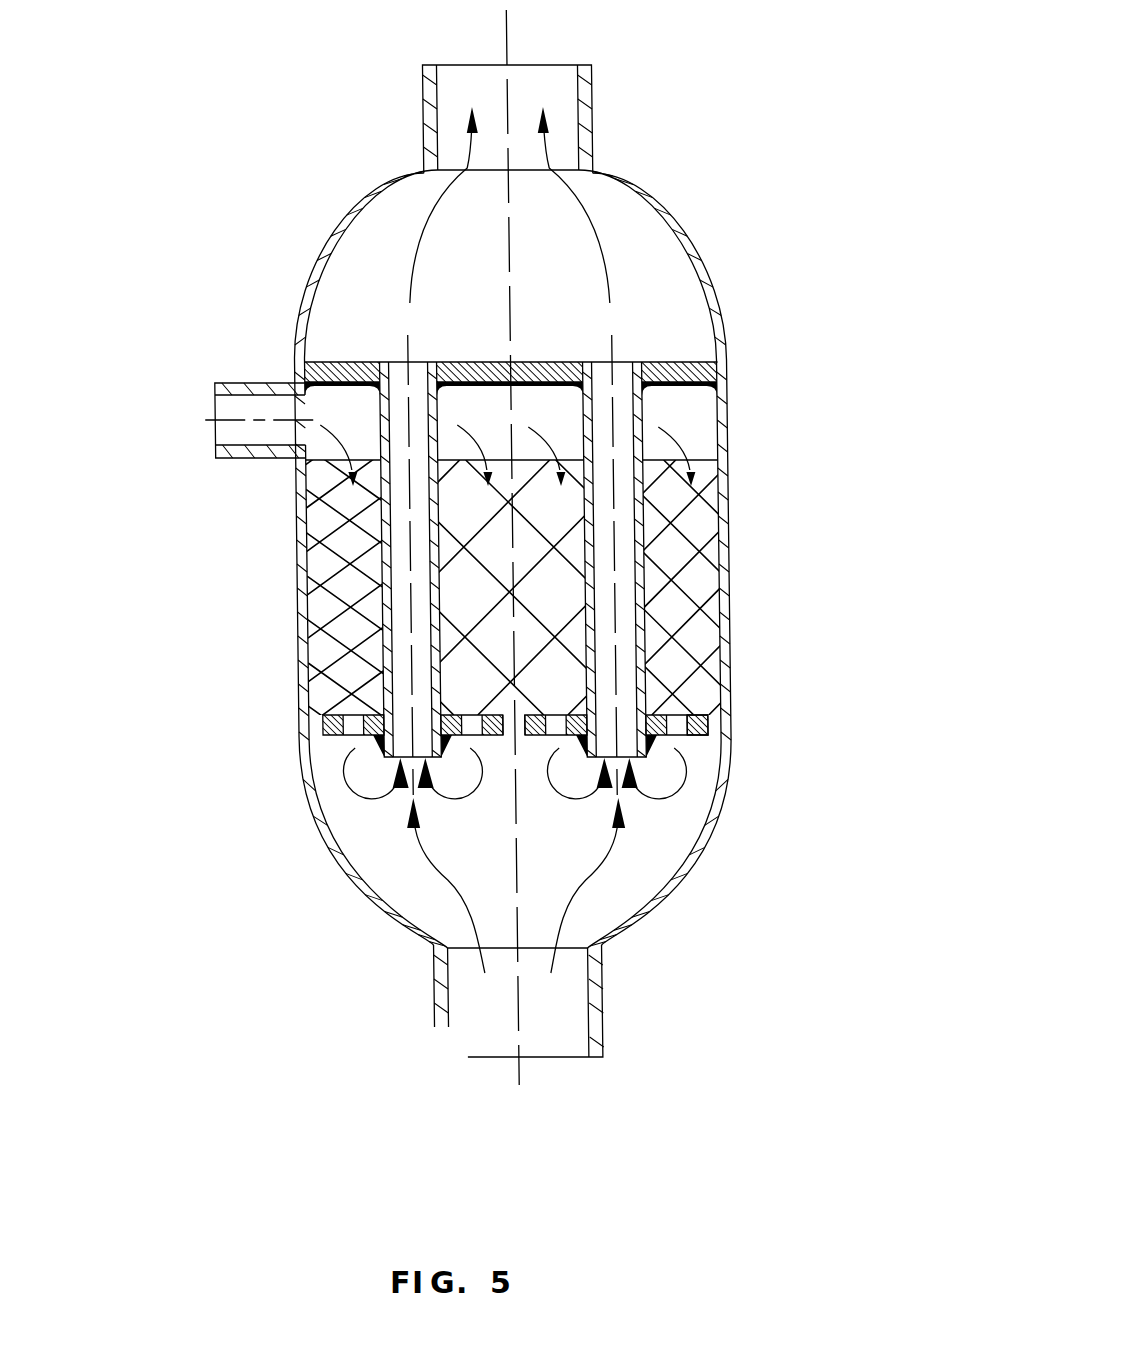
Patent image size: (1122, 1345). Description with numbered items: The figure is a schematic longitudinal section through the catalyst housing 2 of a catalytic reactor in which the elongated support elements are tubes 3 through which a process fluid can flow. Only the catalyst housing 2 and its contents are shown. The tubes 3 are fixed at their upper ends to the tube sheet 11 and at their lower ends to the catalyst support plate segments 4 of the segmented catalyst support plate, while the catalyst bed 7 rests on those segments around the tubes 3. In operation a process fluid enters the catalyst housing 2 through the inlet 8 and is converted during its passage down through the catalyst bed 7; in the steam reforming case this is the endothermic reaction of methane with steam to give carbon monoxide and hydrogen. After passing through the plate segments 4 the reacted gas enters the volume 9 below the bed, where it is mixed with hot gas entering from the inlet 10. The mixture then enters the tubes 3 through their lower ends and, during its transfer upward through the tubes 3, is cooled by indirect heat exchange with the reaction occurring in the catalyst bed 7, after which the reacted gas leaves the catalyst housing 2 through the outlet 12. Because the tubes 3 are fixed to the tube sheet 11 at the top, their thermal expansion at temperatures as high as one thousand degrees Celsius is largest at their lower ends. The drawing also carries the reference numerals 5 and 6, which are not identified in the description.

The catalyst housing 2 is at (649, 200).
The tubes 3 is at (675, 383).
The catalyst support plate segments 4 is at (701, 738).
The lower support plate 5 is at (339, 737).
The central opening 6 is at (503, 735).
The catalyst bed 7 is at (304, 598).
The inlet 8 is at (250, 412).
The volume 9 is at (365, 847).
The inlet 10 is at (560, 995).
The tube sheet 11 is at (647, 423).
The outlet 12 is at (567, 103).